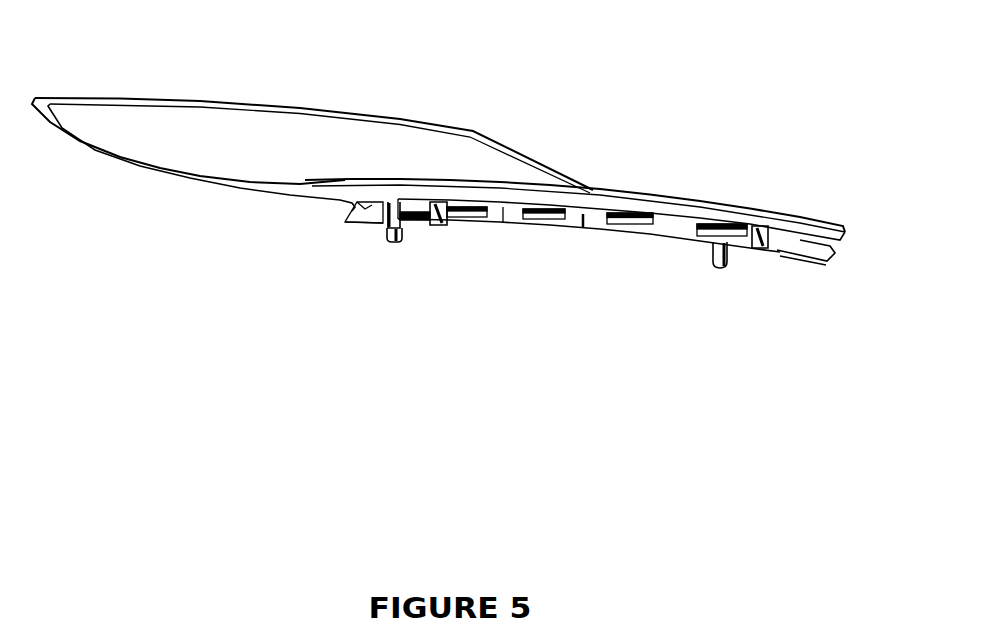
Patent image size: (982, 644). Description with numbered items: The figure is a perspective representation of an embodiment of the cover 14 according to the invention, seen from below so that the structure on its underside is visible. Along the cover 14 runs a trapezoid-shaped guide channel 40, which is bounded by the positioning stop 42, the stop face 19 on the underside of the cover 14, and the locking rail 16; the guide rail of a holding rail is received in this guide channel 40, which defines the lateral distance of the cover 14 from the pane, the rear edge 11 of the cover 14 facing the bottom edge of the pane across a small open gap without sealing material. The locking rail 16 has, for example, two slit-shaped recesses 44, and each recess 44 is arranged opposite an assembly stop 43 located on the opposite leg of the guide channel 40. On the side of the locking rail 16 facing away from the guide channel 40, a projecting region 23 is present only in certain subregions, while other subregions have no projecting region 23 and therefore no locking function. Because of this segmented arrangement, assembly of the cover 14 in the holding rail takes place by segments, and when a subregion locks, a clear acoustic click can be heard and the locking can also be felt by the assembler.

The rear edge 11 is at (772, 213).
The cover 14 is at (180, 108).
The locking rail 16 is at (402, 224).
The stop face 19 is at (373, 207).
The projecting region 23 is at (412, 222).
The guide channel 40 is at (367, 233).
The positioning stop 42 is at (342, 217).
The assembly stop 43 is at (390, 242).
The slit-shaped recess 44 is at (443, 230).